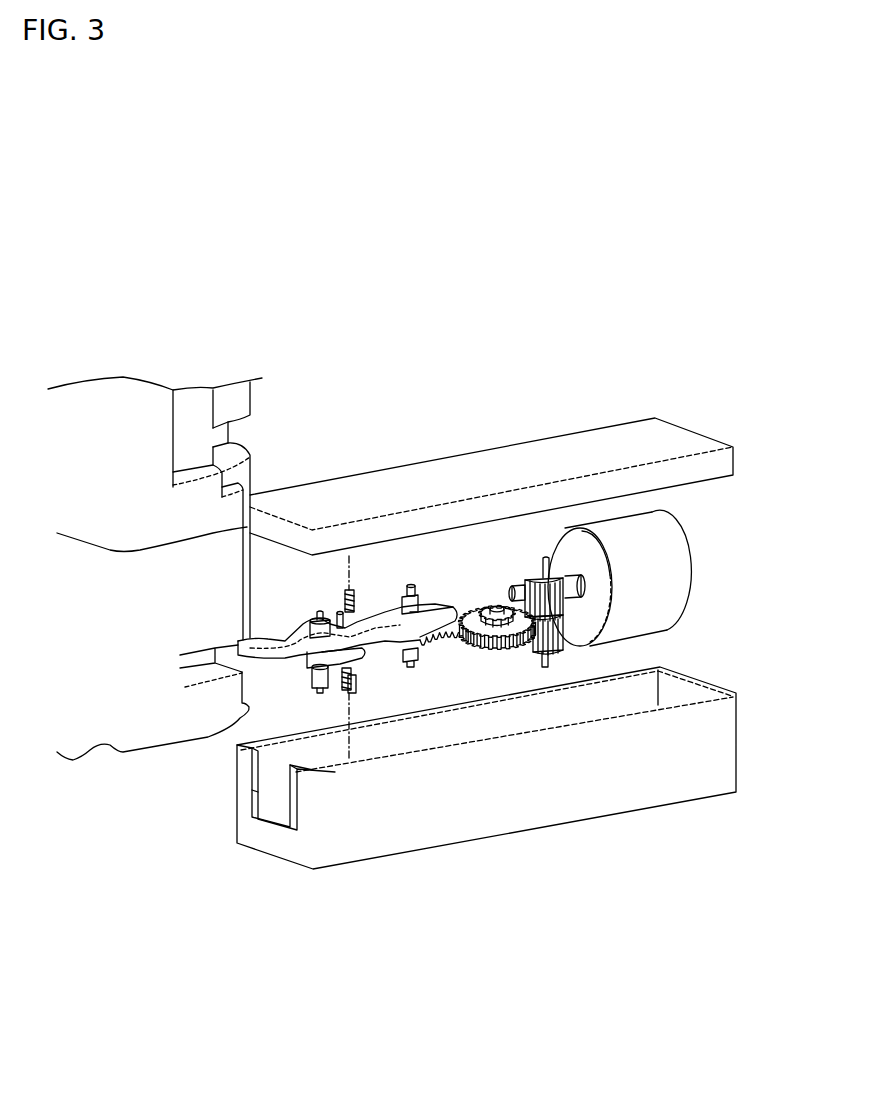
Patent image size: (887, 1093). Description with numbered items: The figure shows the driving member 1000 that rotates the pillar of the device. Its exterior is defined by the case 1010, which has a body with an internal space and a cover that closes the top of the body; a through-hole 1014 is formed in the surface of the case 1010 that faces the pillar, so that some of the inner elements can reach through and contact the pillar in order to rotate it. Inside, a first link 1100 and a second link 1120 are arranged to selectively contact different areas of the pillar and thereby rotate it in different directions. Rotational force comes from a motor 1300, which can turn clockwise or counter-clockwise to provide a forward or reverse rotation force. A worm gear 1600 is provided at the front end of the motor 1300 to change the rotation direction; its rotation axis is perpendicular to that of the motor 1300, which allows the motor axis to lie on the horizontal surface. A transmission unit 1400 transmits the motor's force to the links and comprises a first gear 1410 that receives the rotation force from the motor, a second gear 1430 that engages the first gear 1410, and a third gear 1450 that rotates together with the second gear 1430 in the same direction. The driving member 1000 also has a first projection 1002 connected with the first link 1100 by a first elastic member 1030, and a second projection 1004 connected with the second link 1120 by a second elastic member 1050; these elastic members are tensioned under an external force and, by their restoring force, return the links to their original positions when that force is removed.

The driving member 1000 is at (455, 866).
The first projection 1002 is at (350, 590).
The second projection 1004 is at (353, 687).
The case 1010 is at (556, 787).
The through-hole 1014 is at (259, 801).
The first elastic member 1030 is at (340, 607).
The second elastic member 1050 is at (340, 677).
The first link 1100 is at (296, 638).
The second link 1120 is at (312, 667).
The motor 1300 is at (665, 557).
The transmission unit 1400 is at (490, 412).
The first gear 1410 is at (488, 608).
The second gear 1430 is at (393, 620).
The third gear 1450 is at (393, 643).
The worm gear 1600 is at (562, 605).